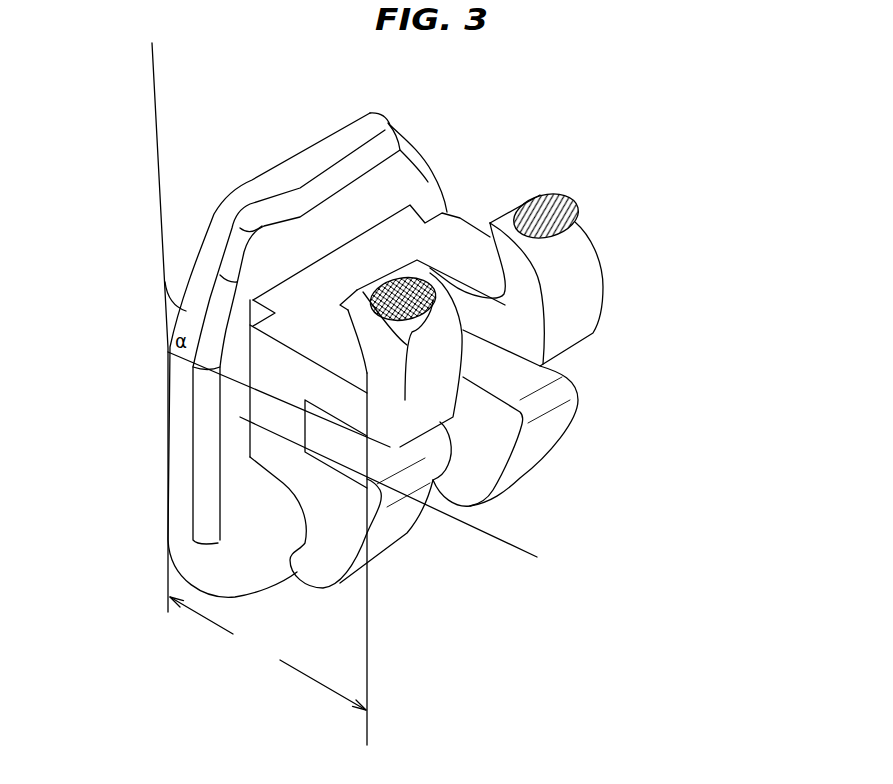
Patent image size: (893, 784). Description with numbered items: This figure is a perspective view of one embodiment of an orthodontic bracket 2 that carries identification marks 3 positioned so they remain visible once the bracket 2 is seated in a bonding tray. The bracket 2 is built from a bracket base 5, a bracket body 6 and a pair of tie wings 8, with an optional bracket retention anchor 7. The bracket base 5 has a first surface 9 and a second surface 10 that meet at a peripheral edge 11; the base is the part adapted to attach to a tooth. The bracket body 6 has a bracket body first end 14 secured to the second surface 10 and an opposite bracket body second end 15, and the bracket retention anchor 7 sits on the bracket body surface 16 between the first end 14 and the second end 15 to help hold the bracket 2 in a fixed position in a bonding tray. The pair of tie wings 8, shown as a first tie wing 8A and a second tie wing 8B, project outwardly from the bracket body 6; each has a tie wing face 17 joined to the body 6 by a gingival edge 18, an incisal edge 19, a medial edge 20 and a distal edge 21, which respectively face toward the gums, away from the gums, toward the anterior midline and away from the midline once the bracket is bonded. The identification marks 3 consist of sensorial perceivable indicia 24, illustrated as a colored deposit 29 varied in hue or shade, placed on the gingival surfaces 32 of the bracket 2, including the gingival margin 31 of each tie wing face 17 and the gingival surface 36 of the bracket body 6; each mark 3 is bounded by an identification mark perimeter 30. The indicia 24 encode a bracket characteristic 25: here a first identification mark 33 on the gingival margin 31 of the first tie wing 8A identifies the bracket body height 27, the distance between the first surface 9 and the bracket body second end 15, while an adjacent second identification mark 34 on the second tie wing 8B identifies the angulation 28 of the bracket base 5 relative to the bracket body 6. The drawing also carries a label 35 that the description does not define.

The bracket 2 is at (438, 128).
The identification mark 3 is at (500, 268).
The bracket base 5 is at (253, 144).
The bracket body 6 is at (252, 461).
The bracket retention anchor 7 is at (250, 327).
The pair of tie wings 8 is at (466, 501).
The first tie wing 8A is at (285, 498).
The second tie wing 8B is at (580, 439).
The first surface 9 is at (344, 126).
The second surface 10 is at (397, 177).
The peripheral edge 11 is at (185, 405).
The bracket body first end 14 is at (412, 200).
The bracket body second end 15 is at (367, 362).
The bracket body surface 16 is at (284, 451).
The tie wing face 17 is at (574, 313).
The gingival edge 18 is at (531, 192).
The incisal edge 19 is at (273, 480).
The medial edge 20 is at (600, 306).
The distal edge 21 is at (545, 303).
The sensorial perceivable indicia 24 is at (652, 184).
The bracket characteristic 25 is at (211, 394).
The bracket body height 27 is at (268, 559).
The angulation 28 is at (186, 311).
The colored deposit 29 is at (578, 207).
The identification mark perimeter 30 is at (550, 234).
The gingival margin 31 is at (363, 292).
The gingival surfaces 32 is at (317, 175).
The first identification mark 33 is at (420, 328).
The second identification mark 34 is at (552, 190).
The corner 35 is at (252, 190).
The gingival surface 36 is at (313, 326).